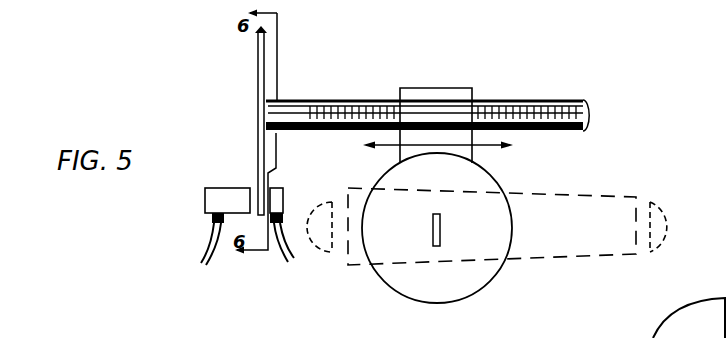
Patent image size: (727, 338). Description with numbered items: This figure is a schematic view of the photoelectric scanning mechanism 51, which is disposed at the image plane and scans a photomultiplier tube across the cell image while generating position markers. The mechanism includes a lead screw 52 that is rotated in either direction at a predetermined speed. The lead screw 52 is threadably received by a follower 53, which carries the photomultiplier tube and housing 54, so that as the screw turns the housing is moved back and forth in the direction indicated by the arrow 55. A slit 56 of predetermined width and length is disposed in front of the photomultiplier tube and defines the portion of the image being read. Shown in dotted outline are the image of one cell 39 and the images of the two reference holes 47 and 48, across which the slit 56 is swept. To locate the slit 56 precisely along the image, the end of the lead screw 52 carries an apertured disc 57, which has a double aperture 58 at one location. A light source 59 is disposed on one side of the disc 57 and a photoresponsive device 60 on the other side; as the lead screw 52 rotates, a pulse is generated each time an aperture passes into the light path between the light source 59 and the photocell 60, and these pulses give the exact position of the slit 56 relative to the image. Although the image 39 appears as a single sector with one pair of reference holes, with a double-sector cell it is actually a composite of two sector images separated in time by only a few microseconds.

The cell image 39 is at (519, 258).
The reference hole 47 is at (331, 253).
The reference hole 48 is at (652, 252).
The photoelectric scanning mechanism 51 is at (378, 88).
The lead screw 52 is at (537, 100).
The follower 53 is at (463, 88).
The photomultiplier tube and housing 54 is at (506, 183).
The arrow 55 is at (388, 146).
The slit 56 is at (440, 222).
The apertured disc 57 is at (265, 58).
The double aperture 58 is at (617, 336).
The light source 59 is at (207, 205).
The photoresponsive device 60 is at (286, 215).